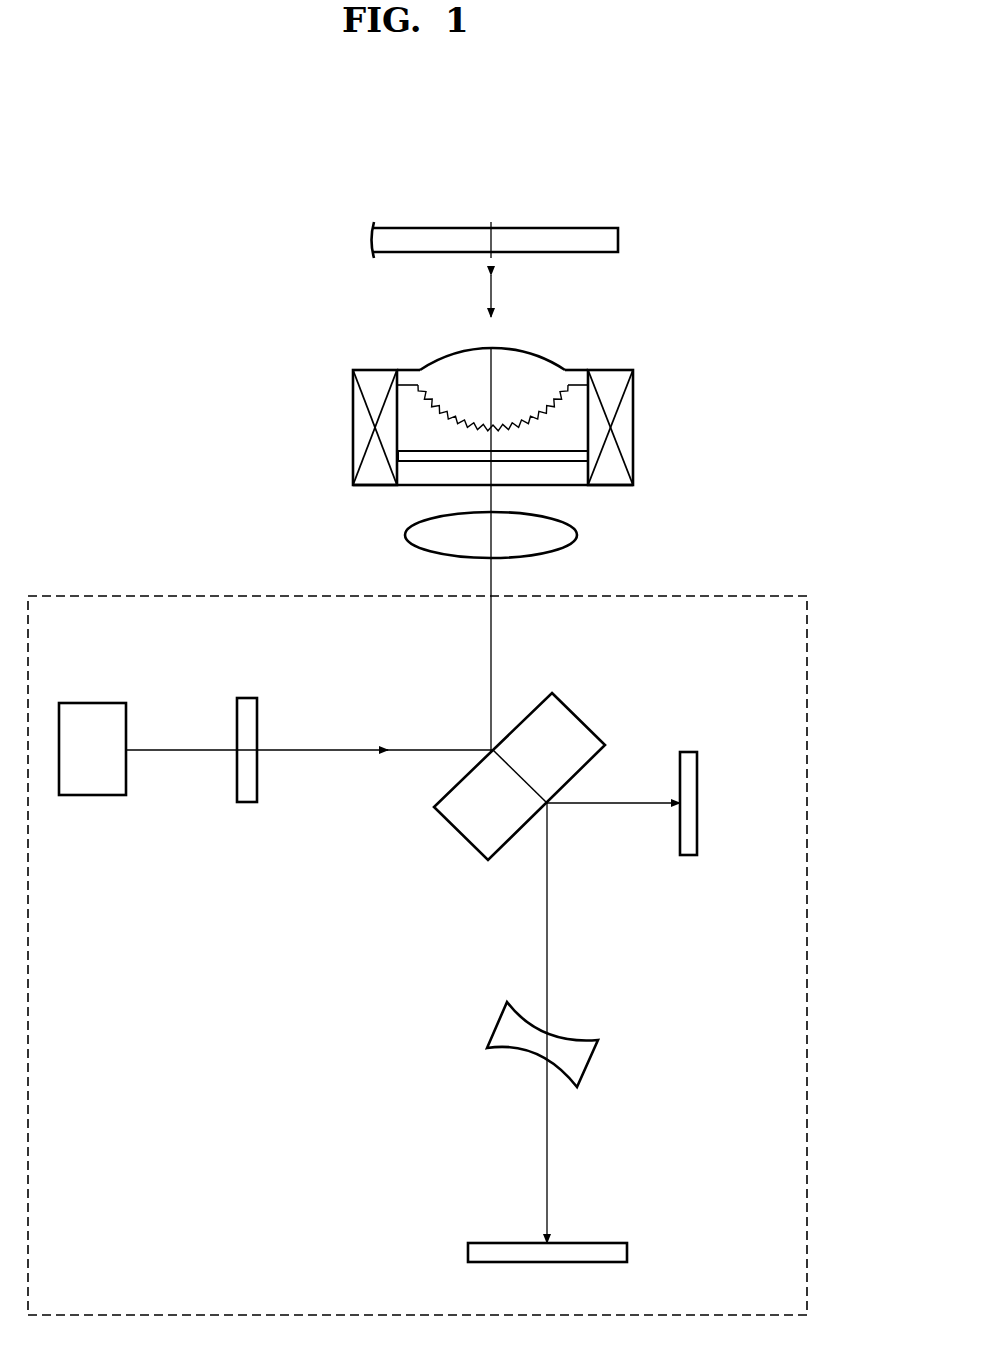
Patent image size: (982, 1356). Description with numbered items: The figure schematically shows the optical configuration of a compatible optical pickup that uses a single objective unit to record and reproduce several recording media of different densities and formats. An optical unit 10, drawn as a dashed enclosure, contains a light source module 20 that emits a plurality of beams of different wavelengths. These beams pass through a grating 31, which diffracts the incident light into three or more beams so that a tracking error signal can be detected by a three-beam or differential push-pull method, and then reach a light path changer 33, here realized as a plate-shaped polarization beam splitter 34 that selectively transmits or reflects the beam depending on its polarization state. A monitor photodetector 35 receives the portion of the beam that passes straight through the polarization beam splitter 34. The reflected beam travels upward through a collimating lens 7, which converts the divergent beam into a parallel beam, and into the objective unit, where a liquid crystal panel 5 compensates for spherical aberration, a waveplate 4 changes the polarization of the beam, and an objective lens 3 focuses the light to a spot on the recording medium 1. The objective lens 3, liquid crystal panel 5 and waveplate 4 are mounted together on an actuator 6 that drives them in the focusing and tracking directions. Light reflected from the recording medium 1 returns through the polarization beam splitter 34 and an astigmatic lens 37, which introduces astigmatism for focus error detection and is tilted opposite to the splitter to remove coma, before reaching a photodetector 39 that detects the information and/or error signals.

The recording medium 1 is at (592, 208).
The objective lens 3 is at (530, 363).
The waveplate 4 is at (577, 458).
The liquid crystal panel 5 is at (575, 477).
The actuator 6 is at (363, 425).
The collimating lens 7 is at (577, 535).
The optical unit 10 is at (735, 596).
The light source module 20 is at (93, 703).
The grating 31 is at (250, 697).
The light path changer 33 is at (549, 737).
The polarization beam splitter 34 is at (582, 718).
The monitor photodetector 35 is at (698, 802).
The astigmatic lens 37 is at (592, 1063).
The photodetector 39 is at (628, 1252).